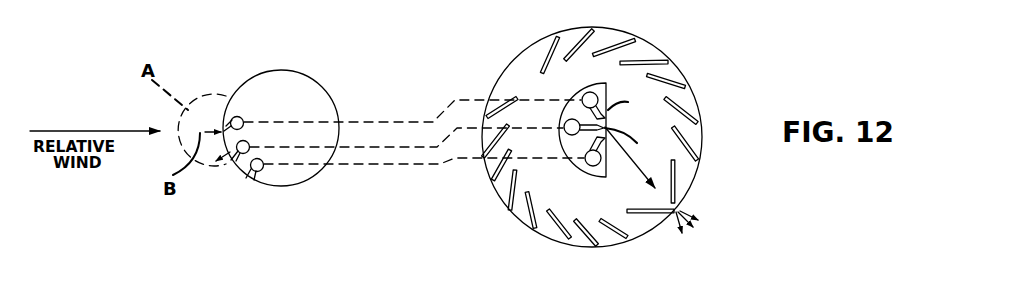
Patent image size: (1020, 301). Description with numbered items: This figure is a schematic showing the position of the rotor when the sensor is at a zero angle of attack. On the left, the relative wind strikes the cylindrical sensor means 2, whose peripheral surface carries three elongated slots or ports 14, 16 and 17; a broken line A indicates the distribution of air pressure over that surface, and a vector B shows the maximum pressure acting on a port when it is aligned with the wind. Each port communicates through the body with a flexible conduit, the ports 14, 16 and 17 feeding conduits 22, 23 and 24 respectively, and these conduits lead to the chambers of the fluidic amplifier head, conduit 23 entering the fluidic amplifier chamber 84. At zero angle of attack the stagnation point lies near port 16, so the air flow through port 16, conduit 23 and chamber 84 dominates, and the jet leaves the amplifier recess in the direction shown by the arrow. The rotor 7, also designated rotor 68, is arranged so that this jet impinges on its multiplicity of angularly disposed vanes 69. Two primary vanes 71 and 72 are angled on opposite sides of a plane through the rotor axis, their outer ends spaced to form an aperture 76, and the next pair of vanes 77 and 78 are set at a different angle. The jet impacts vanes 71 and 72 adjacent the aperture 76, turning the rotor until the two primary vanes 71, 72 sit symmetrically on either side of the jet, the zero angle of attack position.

The sensor means 2 is at (311, 69).
The rotor 7 is at (679, 64).
The slot 14 is at (240, 157).
The slot 16 is at (223, 113).
The slot 17 is at (257, 173).
The conduit 22 is at (358, 147).
The conduit 23 is at (402, 120).
The conduit 24 is at (398, 166).
The rotor 68 is at (521, 226).
The vanes 69 is at (688, 107).
The primary vane 71 is at (668, 180).
The primary vane 72 is at (653, 213).
The aperture 76 is at (680, 210).
The vane 77 is at (690, 147).
The vane 78 is at (622, 237).
The fluidic amplifier chamber 84 is at (594, 87).